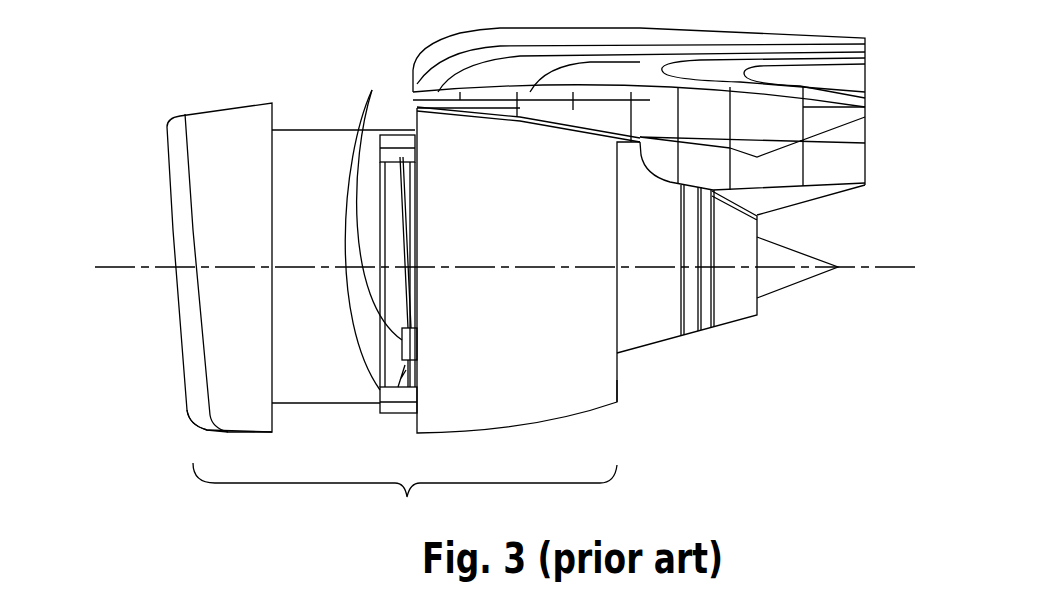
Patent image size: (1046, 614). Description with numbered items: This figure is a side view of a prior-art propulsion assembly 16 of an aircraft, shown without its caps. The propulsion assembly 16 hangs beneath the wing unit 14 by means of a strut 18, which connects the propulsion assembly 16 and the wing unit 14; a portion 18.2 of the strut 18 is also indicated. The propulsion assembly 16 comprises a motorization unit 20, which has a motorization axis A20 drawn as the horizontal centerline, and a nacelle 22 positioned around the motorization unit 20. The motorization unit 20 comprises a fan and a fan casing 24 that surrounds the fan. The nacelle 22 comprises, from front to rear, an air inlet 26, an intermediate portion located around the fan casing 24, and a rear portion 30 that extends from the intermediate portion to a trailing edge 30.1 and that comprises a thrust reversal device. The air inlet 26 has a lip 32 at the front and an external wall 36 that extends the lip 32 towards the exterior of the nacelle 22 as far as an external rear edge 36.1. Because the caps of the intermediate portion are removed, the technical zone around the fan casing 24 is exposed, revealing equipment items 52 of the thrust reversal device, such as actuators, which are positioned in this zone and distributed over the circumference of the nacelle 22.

The wing unit 14 is at (822, 62).
The propulsion assembly 16 is at (169, 248).
The strut 18 is at (678, 151).
The pylon lower structure 18.2 is at (820, 118).
The motorization unit 20 is at (555, 253).
The nacelle 22 is at (405, 497).
The fan casing 24 is at (345, 147).
The air inlet 26 is at (195, 116).
The rear portion 30 is at (560, 288).
The trailing edge 30.1 is at (618, 387).
The lip 32 is at (170, 197).
The external wall 36 is at (228, 432).
The external rear edge 36.1 is at (273, 435).
The equipment items 52 is at (386, 128).
The motorization axis A20 is at (865, 268).